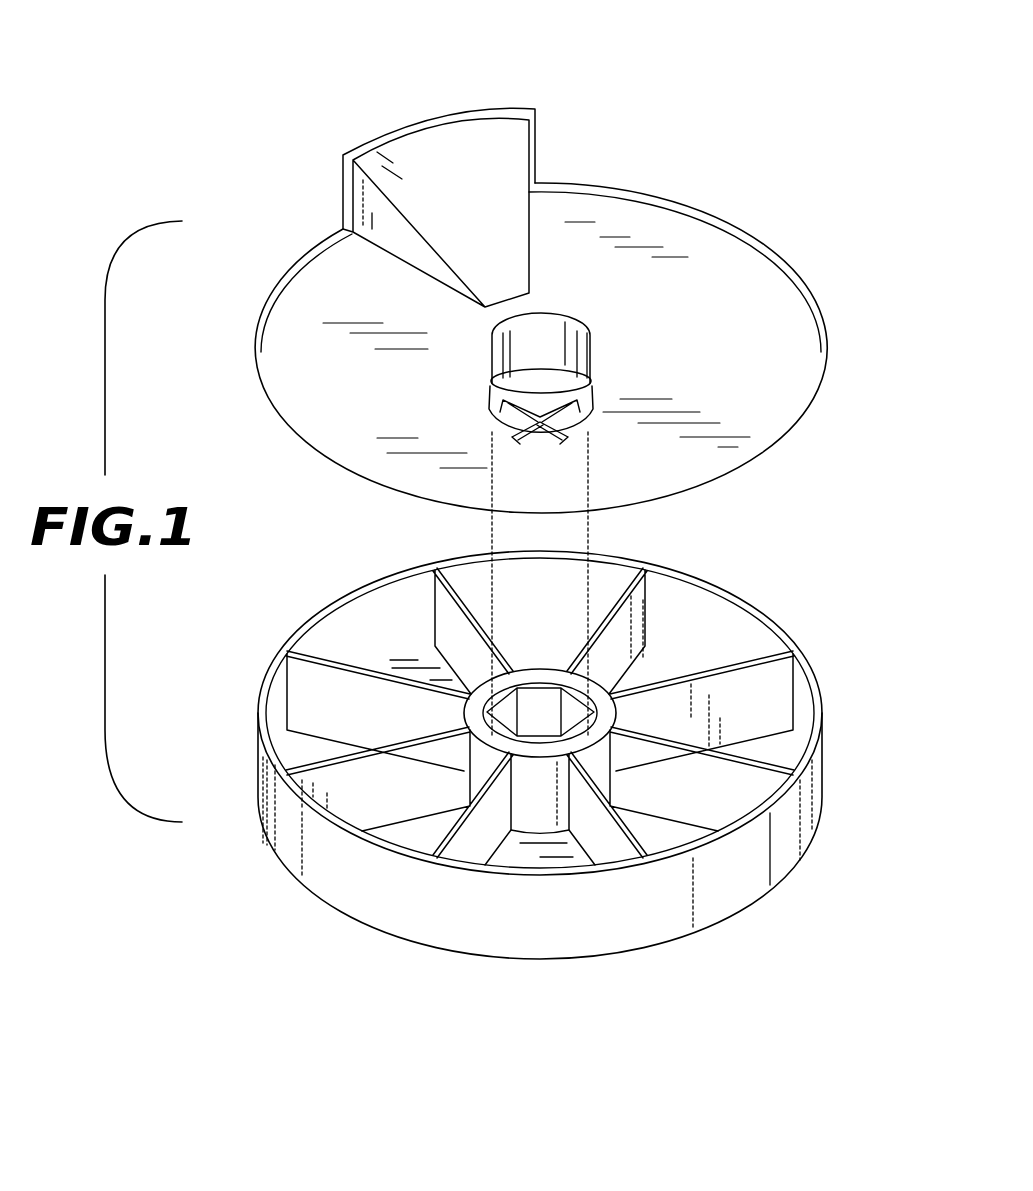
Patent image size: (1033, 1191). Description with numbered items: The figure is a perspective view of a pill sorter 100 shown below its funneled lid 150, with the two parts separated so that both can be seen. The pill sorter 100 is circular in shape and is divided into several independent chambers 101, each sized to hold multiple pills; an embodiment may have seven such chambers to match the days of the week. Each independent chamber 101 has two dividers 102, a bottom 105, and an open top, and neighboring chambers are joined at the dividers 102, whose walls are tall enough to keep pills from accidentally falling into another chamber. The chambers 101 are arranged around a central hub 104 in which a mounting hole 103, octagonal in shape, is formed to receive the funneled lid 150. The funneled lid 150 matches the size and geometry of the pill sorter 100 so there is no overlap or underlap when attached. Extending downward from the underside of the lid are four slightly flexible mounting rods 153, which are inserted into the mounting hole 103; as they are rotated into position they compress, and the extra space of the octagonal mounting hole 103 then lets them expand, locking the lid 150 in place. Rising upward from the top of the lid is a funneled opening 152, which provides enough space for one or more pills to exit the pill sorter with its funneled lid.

The pill sorter 100 is at (492, 777).
The independent chamber 101 is at (810, 785).
The divider 102 is at (410, 800).
The mounting hole 103 is at (547, 706).
The central hub 104 is at (615, 705).
The bottom 105 is at (312, 752).
The funneled lid 150 is at (807, 178).
The funneled opening 152 is at (467, 138).
The mounting rod 153 is at (540, 382).